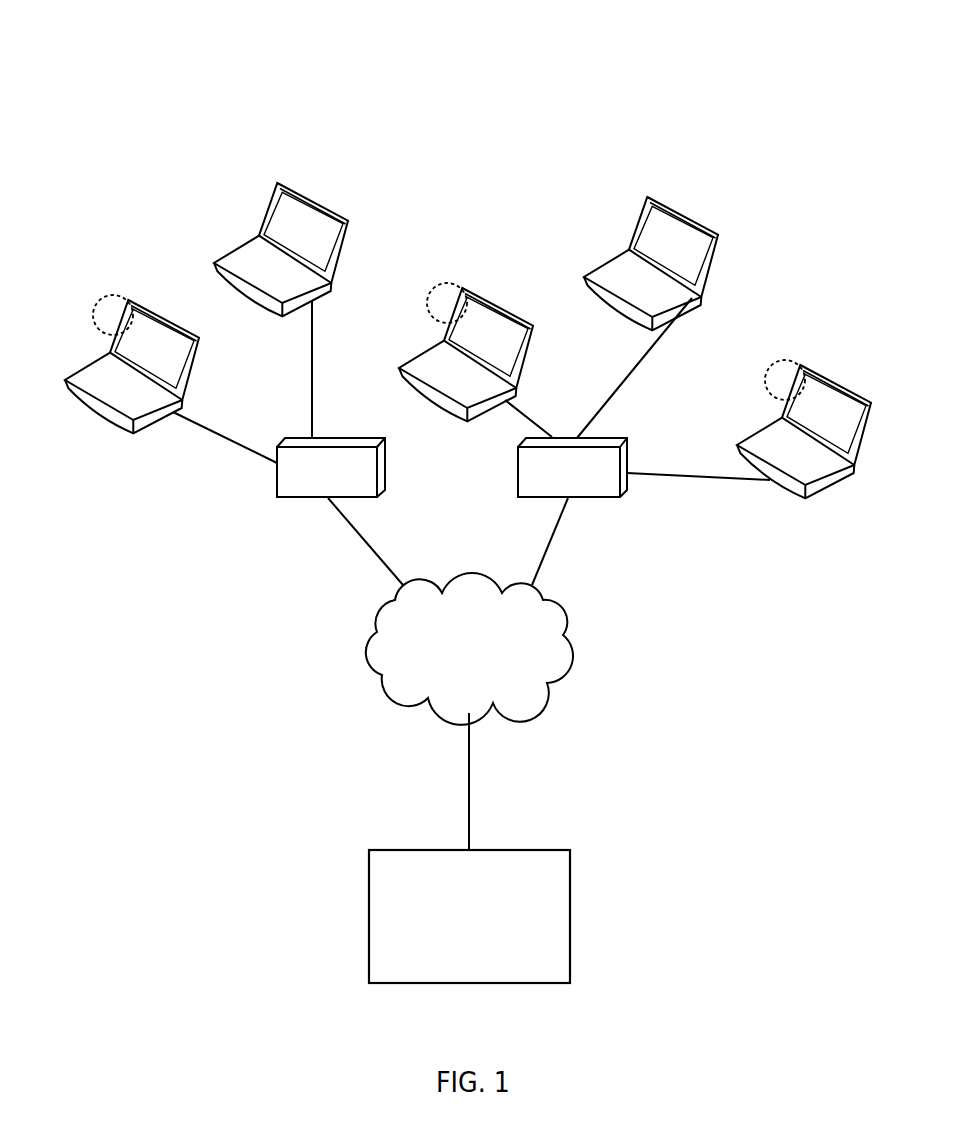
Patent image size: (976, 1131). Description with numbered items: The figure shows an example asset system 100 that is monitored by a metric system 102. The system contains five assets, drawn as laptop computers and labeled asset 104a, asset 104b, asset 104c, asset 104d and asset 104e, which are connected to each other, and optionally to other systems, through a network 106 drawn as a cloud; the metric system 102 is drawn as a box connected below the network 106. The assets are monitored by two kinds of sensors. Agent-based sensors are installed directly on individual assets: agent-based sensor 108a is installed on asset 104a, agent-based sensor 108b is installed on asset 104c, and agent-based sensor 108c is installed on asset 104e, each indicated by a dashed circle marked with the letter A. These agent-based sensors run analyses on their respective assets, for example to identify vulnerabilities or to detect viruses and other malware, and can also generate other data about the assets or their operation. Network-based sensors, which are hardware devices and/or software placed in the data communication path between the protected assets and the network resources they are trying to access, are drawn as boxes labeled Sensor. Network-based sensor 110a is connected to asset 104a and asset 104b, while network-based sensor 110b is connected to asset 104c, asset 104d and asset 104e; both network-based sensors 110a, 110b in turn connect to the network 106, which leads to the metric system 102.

The asset system 100 is at (118, 65).
The metric system 102 is at (469, 916).
The asset 104a is at (84, 364).
The asset 104b is at (243, 245).
The asset 104c is at (418, 351).
The asset 104d is at (608, 261).
The asset 104e is at (757, 428).
The network 106 is at (469, 649).
The agent-based sensor 108a is at (110, 293).
The agent-based sensor 108b is at (445, 283).
The agent-based sensor 108c is at (784, 360).
The network-based sensor 110a is at (301, 498).
The network-based sensor 110b is at (603, 498).